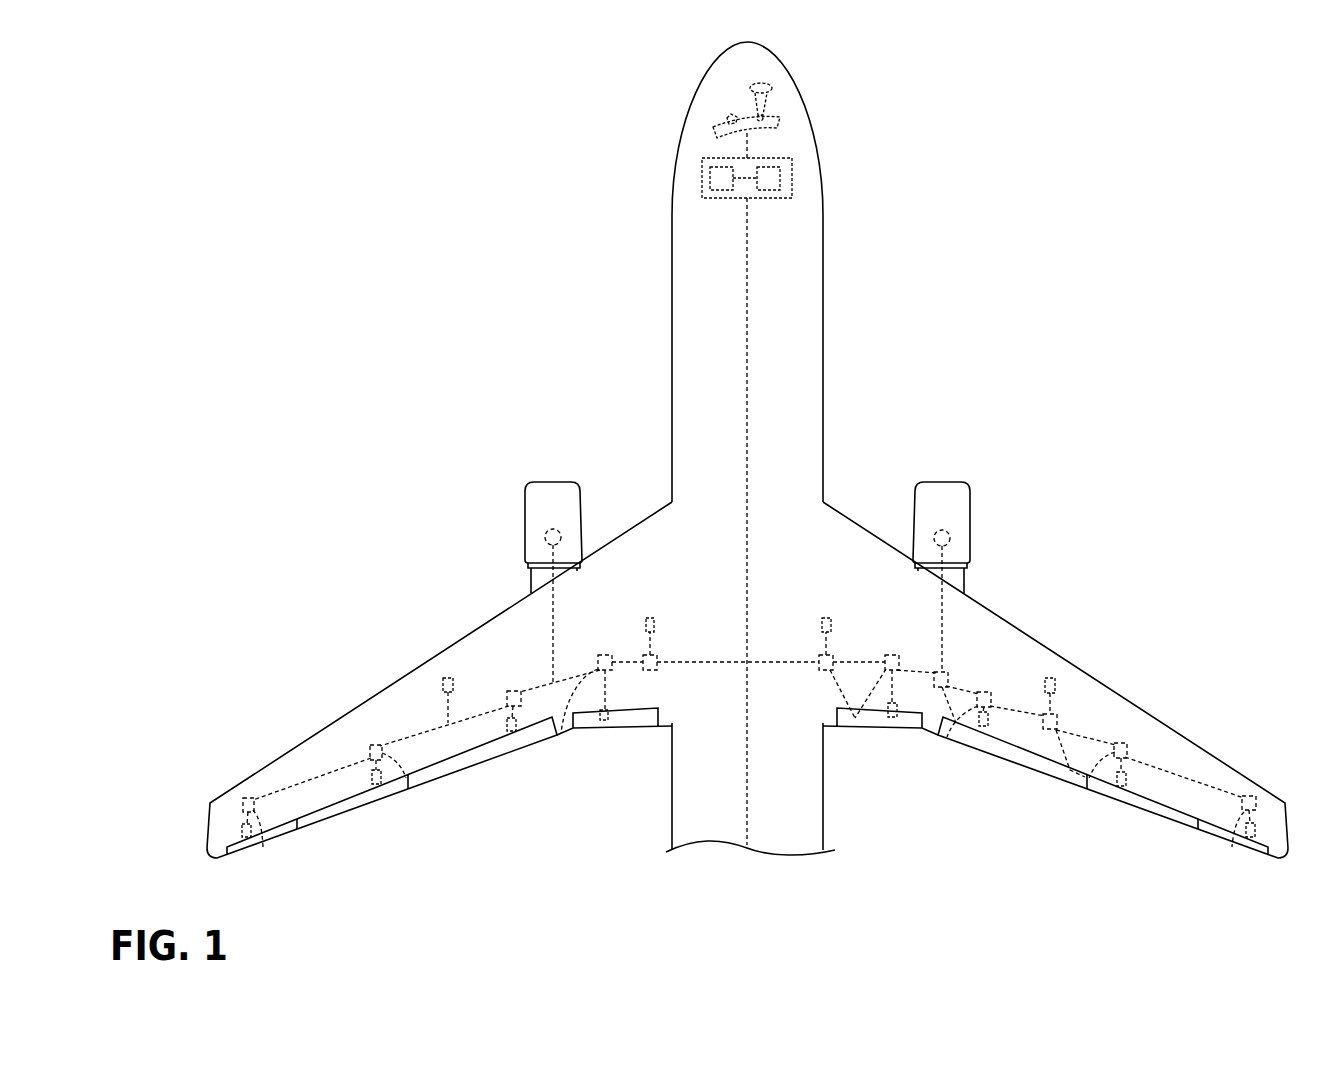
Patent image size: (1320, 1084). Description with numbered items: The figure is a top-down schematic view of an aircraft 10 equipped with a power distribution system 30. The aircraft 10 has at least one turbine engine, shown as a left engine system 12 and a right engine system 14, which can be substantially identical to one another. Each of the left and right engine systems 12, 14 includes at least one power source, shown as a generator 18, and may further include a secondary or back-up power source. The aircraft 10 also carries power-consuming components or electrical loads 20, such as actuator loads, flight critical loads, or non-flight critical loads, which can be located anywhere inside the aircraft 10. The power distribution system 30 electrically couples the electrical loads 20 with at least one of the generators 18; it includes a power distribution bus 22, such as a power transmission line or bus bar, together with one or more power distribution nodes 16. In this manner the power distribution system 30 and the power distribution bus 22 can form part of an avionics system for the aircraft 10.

The aircraft 10 is at (569, 73).
The left engine system 12 is at (552, 492).
The right engine system 14 is at (953, 495).
The power distribution node 16 is at (263, 847).
The generator 18 is at (568, 532).
The electrical load 20 is at (718, 187).
The power distribution bus 22 is at (747, 373).
The power distribution system 30 is at (977, 651).